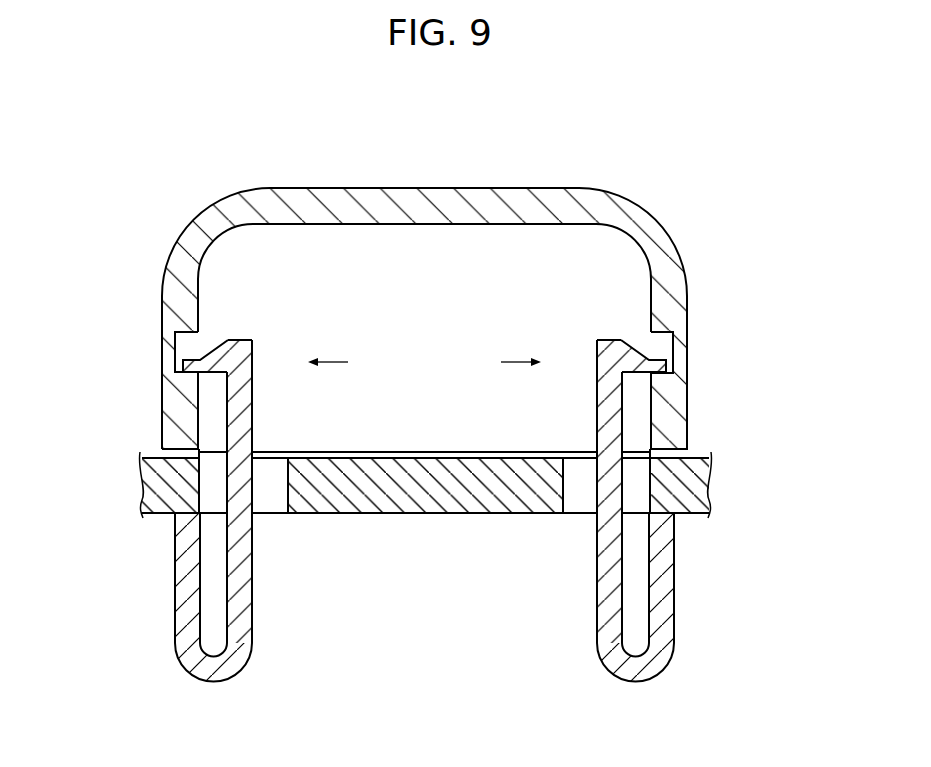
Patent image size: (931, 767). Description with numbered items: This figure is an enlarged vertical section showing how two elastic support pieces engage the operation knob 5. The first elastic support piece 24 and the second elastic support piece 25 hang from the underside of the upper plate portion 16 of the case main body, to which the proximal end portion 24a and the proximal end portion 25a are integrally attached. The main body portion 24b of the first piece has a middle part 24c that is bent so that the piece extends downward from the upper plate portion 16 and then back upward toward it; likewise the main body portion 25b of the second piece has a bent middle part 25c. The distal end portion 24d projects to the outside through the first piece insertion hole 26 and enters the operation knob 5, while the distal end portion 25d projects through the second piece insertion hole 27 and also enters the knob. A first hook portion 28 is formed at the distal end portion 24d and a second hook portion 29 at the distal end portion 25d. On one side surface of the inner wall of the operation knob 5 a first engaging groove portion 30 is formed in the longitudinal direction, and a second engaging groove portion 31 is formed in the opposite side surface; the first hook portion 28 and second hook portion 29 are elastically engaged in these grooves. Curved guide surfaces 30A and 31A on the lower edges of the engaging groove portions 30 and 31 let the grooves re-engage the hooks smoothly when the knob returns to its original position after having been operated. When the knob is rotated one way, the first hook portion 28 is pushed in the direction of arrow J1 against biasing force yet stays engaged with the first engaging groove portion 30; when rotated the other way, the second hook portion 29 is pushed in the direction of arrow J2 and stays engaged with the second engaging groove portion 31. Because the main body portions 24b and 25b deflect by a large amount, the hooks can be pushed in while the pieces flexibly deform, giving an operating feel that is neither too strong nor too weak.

The operation knob 5 is at (429, 299).
The upper plate portion 16 is at (432, 482).
The first elastic support piece 24 is at (204, 424).
The proximal end portion 24a is at (181, 528).
The main body portion 24b is at (249, 551).
The middle part 24c is at (200, 670).
The distal end portion 24d is at (240, 343).
The second elastic support piece 25 is at (652, 477).
The proximal end portion 25a is at (668, 533).
The main body portion 25b is at (612, 569).
The middle part 25c is at (640, 667).
The distal end portion 25d is at (613, 342).
The first piece insertion hole 26 is at (193, 463).
The second piece insertion hole 27 is at (656, 476).
The first hook portion 28 is at (200, 362).
The second hook portion 29 is at (663, 361).
The first engaging groove portion 30 is at (191, 336).
The curved guide surface 30A is at (197, 379).
The second engaging groove portion 31 is at (668, 338).
The curved guide surface 31A is at (656, 380).
The arrow J1 is at (314, 361).
The arrow J2 is at (533, 361).